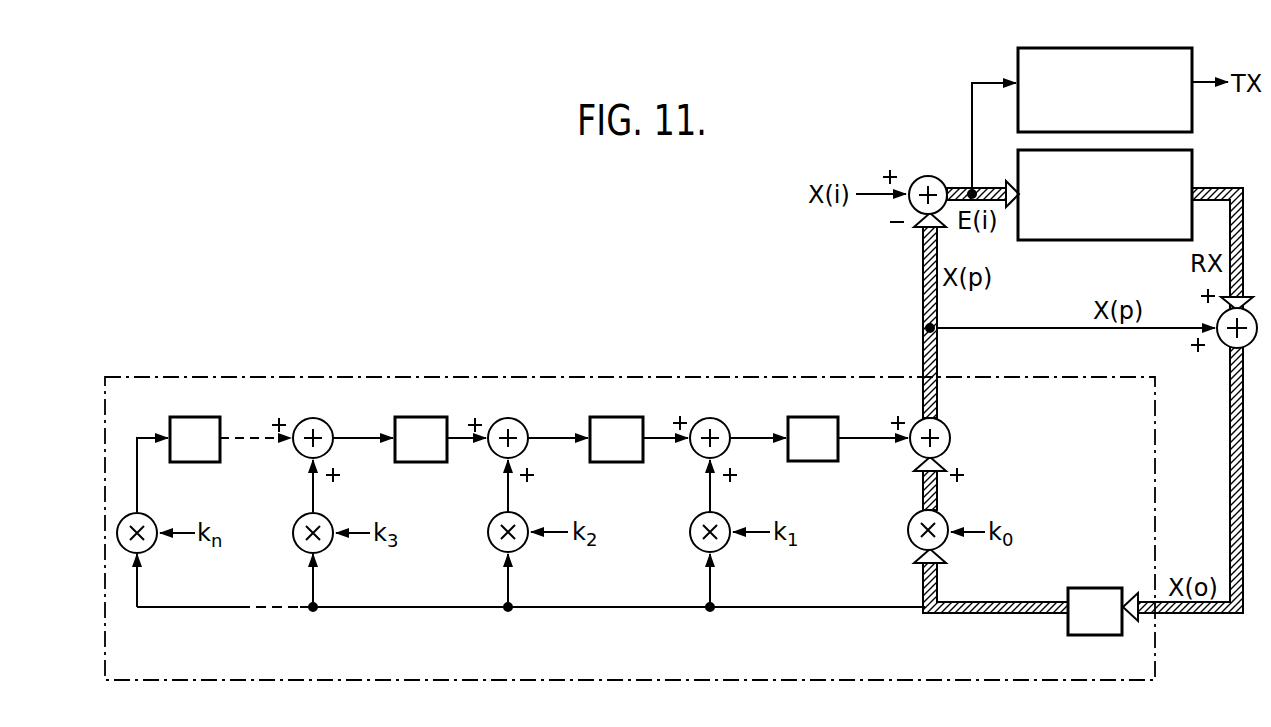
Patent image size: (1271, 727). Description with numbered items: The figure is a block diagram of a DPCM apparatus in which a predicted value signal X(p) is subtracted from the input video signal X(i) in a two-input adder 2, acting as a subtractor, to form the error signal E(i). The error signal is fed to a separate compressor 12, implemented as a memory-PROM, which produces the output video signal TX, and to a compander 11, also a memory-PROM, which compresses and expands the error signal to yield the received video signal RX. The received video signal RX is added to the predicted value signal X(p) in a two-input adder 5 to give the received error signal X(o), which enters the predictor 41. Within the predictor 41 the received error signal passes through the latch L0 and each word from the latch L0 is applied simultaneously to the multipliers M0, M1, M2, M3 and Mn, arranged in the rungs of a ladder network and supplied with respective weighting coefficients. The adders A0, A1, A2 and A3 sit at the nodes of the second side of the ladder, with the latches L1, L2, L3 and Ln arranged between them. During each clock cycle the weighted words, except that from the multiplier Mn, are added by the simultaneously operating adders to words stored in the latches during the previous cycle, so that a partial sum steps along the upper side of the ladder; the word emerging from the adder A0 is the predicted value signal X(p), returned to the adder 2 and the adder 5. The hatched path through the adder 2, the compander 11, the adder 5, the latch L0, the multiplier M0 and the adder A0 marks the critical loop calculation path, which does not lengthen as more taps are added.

The two-input adder 2 is at (927, 175).
The compressor 12 is at (1110, 55).
The compander 11 is at (1180, 173).
The two-input adder 5 is at (1227, 341).
The predictor 41 is at (705, 377).
The latch Ln is at (206, 459).
The latch L3 is at (428, 462).
The latch L2 is at (618, 462).
The latch L1 is at (822, 461).
The latch L0 is at (1112, 628).
The adder A3 is at (303, 452).
The adder A2 is at (499, 454).
The adder A1 is at (700, 454).
The adder A0 is at (912, 452).
The multiplier Mn is at (152, 544).
The multiplier M3 is at (328, 545).
The multiplier M2 is at (494, 548).
The multiplier M1 is at (696, 549).
The multiplier M0 is at (942, 520).